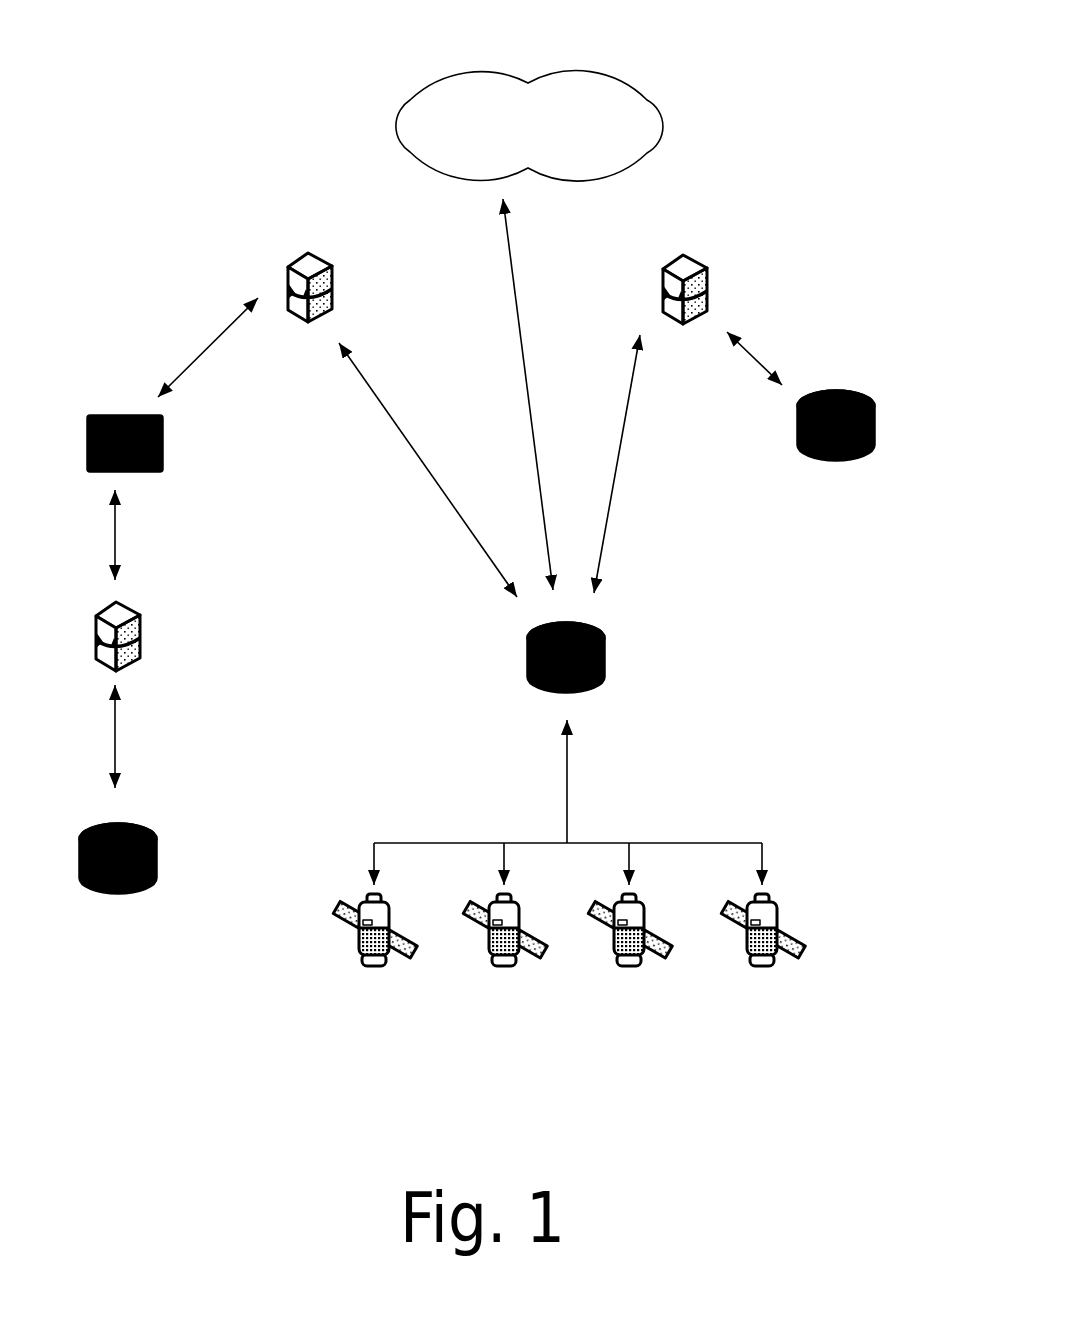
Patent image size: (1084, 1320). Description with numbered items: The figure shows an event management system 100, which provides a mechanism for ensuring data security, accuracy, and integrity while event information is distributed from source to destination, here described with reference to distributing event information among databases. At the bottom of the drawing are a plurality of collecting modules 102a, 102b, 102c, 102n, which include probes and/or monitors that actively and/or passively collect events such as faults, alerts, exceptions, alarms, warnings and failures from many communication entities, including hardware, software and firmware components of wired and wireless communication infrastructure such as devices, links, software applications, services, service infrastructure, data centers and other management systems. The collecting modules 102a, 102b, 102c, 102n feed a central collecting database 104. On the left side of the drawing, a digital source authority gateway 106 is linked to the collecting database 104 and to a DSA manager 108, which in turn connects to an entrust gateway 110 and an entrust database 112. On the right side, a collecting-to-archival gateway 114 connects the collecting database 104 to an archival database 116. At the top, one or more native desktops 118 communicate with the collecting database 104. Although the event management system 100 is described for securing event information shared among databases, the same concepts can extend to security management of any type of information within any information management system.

The event management system 100 is at (953, 16).
The collecting module 102a is at (342, 945).
The collecting module 102b is at (472, 945).
The collecting module 102c is at (597, 945).
The collecting module 102n is at (730, 945).
The collecting database 104 is at (602, 693).
The digital source authority gateway 106 is at (348, 284).
The DSA manager 108 is at (161, 467).
The entrust gateway 110 is at (142, 628).
The entrust database 112 is at (155, 893).
The collecting-to-archival gateway 114 is at (720, 292).
The archival database 116 is at (872, 462).
The native desktops 118 is at (369, 104).